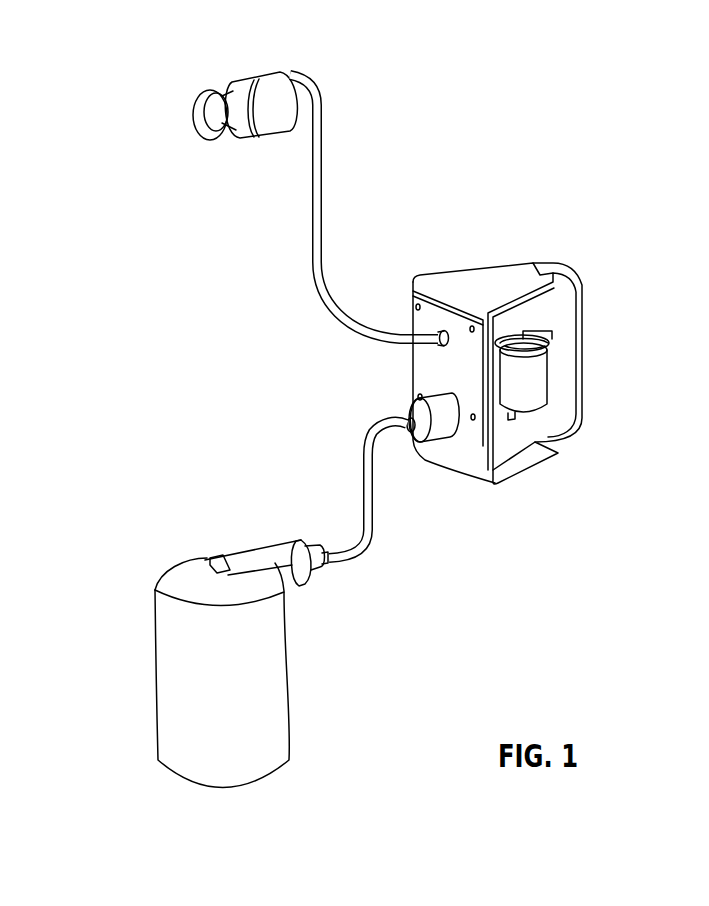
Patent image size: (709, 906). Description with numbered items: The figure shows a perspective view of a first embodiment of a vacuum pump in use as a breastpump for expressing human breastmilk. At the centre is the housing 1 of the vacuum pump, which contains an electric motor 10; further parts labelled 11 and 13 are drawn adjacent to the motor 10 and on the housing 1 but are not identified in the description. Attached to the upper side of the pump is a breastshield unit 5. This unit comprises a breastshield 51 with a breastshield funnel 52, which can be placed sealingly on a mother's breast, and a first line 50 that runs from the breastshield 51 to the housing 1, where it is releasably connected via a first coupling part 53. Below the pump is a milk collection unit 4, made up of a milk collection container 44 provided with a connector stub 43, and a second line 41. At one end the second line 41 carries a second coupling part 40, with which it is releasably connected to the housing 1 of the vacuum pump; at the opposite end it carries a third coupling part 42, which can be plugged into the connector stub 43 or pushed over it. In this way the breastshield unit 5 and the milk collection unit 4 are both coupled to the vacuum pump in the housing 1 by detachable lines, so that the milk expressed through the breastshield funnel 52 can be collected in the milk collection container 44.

The housing 1 is at (513, 277).
The milk collection unit 4 is at (181, 520).
The breastshield unit 5 is at (323, 71).
The electric motor 10 is at (525, 393).
The pump head 11 is at (545, 338).
The mounting plate 13 is at (428, 377).
The second coupling part 40 is at (442, 425).
The second line 41 is at (371, 538).
The third coupling part 42 is at (307, 547).
The connector stub 43 is at (263, 561).
The milk collection container 44 is at (187, 675).
The first line 50 is at (321, 203).
The breastshield 51 is at (270, 123).
The breastshield funnel 52 is at (195, 108).
The first coupling part 53 is at (449, 329).